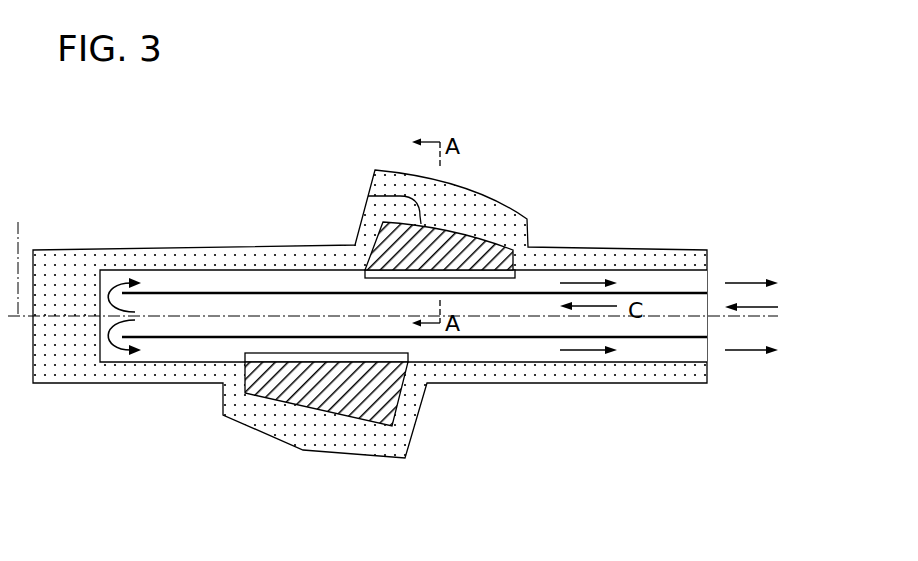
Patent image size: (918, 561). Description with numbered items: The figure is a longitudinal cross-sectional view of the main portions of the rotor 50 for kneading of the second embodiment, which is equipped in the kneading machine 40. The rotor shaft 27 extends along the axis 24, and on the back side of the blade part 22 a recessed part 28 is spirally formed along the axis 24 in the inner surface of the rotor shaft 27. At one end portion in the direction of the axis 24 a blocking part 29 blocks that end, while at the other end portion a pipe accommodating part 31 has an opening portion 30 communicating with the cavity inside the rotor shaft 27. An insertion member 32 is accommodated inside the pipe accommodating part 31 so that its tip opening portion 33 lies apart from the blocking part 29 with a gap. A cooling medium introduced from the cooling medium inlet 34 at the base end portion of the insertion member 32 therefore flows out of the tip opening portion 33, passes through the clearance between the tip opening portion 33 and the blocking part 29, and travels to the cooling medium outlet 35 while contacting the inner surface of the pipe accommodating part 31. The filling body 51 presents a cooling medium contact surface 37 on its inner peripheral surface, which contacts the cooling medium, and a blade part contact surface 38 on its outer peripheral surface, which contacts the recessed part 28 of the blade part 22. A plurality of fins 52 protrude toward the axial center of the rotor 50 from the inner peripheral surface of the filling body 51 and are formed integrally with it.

The blade part 22 is at (402, 179).
The axis 24 is at (19, 254).
The rotor shaft 27 is at (684, 250).
The recessed part 28 is at (482, 240).
The blocking part 29 is at (101, 322).
The opening portion 30 is at (700, 375).
The pipe accommodating part 31 is at (670, 360).
The insertion member 32 is at (498, 340).
The tip opening portion 33 is at (124, 336).
The cooling medium inlet 34 is at (688, 337).
The cooling medium outlet 35 is at (694, 270).
The cooling medium contact surface 37 is at (503, 276).
The blade part contact surface 38 is at (368, 196).
The kneading machine 40 is at (547, 108).
The rotor for kneading 50 is at (626, 240).
The filling body 51 is at (470, 243).
The fins 52 is at (297, 353).